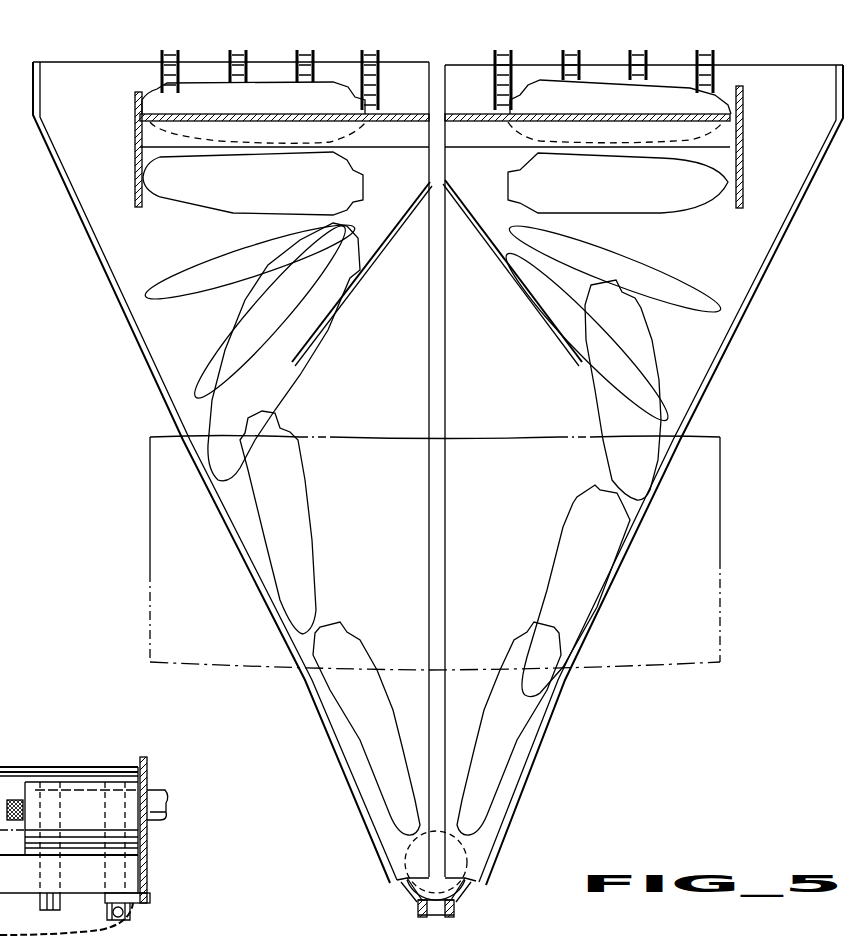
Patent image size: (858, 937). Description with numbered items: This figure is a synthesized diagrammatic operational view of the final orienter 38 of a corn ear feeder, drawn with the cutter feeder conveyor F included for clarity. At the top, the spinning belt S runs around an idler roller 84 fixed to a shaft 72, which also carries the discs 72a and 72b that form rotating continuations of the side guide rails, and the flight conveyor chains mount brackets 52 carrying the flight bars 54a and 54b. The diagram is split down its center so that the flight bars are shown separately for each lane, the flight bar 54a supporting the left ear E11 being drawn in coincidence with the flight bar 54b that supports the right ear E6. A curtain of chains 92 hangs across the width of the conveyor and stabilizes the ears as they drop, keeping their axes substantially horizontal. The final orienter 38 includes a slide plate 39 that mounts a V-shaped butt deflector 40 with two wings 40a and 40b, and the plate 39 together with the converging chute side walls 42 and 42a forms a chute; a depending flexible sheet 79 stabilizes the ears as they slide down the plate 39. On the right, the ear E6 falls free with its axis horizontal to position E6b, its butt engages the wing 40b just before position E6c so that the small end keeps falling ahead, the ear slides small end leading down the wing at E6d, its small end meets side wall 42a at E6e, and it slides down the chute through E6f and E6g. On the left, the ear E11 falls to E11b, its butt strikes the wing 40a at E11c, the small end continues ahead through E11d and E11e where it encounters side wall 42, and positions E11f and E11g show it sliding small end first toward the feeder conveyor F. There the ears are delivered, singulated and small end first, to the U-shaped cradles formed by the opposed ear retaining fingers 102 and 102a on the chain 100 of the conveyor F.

The final orienter 38 is at (104, 259).
The slide plate 39 is at (398, 543).
The butt deflector 40 is at (401, 210).
The wing of the butt deflector 40a is at (355, 260).
The wing of the butt deflector 40b is at (511, 257).
The chute side wall 42 is at (160, 384).
The chute side wall 42a is at (705, 393).
The bracket 52 is at (138, 920).
The flight bar 54a is at (148, 135).
The flight bar 54b is at (723, 135).
The shaft 72 is at (173, 815).
The disc 72a is at (745, 110).
The disc 72b is at (135, 110).
The flexible sheet 79 is at (720, 467).
The idler roller 84 is at (90, 770).
The chains 92 is at (365, 52).
The chain 100 is at (456, 910).
The ear retaining finger 102 is at (407, 890).
The ear retaining finger 102a is at (467, 890).
The feeder conveyor F is at (413, 907).
The spinning belt S is at (0, 767).
The ear E11 is at (152, 99).
The ear position E11b is at (217, 207).
The ear position E11c is at (215, 250).
The ear position E11d is at (213, 353).
The ear position E11e is at (277, 393).
The ear position E11f is at (304, 484).
The ear position E11g is at (350, 633).
The ear E6 is at (697, 100).
The ear position E6b is at (668, 208).
The ear position E6c is at (668, 264).
The ear position E6d is at (661, 362).
The ear position E6e is at (596, 408).
The ear position E6f is at (577, 500).
The ear position E6g is at (520, 635).